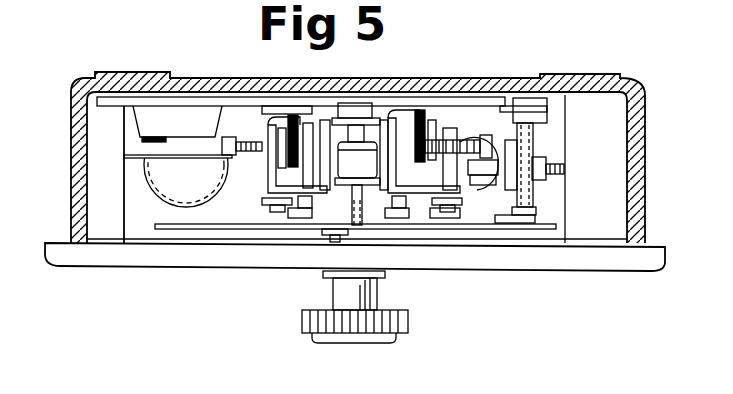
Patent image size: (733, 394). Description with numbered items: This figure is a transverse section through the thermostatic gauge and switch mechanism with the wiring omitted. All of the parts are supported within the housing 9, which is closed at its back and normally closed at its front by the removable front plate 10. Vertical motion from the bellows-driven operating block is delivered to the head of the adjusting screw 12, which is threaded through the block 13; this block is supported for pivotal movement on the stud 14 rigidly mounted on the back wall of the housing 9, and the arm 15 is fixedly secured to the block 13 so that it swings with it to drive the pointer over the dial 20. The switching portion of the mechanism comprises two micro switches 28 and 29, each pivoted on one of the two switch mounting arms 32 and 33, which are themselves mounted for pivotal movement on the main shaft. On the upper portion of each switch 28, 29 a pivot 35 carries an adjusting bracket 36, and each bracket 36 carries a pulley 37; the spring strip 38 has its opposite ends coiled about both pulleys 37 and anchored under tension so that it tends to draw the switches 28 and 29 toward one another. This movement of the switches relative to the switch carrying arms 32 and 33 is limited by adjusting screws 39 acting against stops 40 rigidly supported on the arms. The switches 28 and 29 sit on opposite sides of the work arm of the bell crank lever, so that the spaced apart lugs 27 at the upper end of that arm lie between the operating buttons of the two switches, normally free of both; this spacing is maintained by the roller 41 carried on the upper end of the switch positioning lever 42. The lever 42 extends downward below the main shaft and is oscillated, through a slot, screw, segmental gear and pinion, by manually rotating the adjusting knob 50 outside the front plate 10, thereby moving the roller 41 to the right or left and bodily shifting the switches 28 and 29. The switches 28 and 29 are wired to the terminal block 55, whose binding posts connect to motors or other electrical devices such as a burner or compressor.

The housing 9 is at (645, 142).
The front plate 10 is at (60, 270).
The adjusting screw 12 is at (562, 173).
The block 13 is at (535, 152).
The stud 14 is at (522, 135).
The arm 15 is at (506, 210).
The dial 20 is at (173, 230).
The lugs 27 is at (357, 183).
The switch 28 is at (228, 178).
The switch 29 is at (478, 208).
The switch mounting arm 32 is at (308, 97).
The switch mounting arm 33 is at (400, 93).
The pivot 35 is at (258, 206).
The adjusting bracket 36 is at (462, 120).
The pulley 37 is at (310, 208).
The spring strip 38 is at (328, 238).
The adjusting screws 39 is at (222, 145).
The stops 40 is at (292, 128).
The roller 41 is at (368, 98).
The switch positioning lever 42 is at (356, 121).
The adjusting knob 50 is at (312, 335).
The terminal block 55 is at (140, 118).